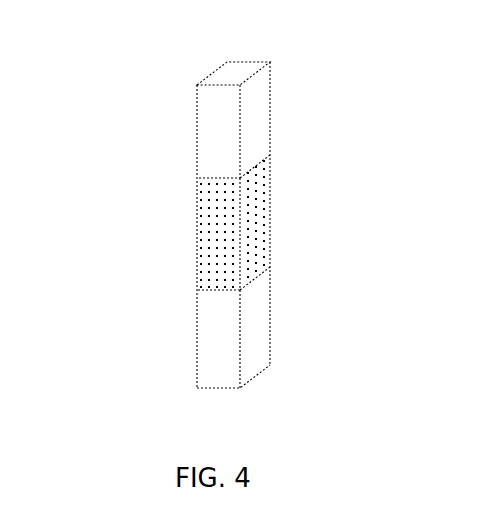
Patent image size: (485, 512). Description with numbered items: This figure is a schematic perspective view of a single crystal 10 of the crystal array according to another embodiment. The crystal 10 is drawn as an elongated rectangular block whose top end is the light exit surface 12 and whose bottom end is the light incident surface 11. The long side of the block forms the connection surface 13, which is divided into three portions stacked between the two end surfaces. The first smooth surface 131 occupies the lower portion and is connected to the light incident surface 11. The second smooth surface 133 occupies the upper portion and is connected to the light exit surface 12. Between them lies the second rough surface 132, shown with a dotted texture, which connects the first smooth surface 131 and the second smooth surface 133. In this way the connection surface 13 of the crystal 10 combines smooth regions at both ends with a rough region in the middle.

The crystal 10 is at (297, 217).
The light incident surface 11 is at (223, 388).
The light exit surface 12 is at (223, 65).
The connection surface 13 is at (98, 90).
The first smooth surface 131 is at (213, 370).
The second rough surface 132 is at (213, 258).
The second smooth surface 133 is at (212, 142).